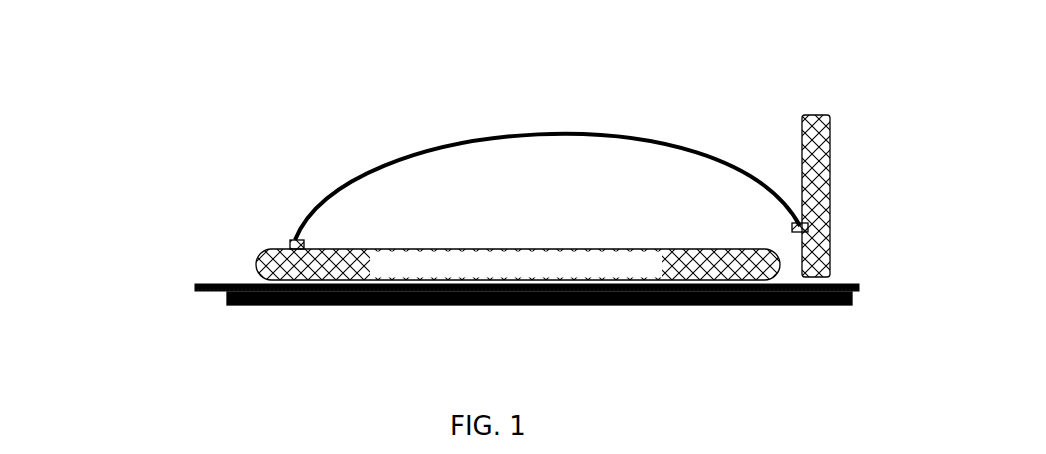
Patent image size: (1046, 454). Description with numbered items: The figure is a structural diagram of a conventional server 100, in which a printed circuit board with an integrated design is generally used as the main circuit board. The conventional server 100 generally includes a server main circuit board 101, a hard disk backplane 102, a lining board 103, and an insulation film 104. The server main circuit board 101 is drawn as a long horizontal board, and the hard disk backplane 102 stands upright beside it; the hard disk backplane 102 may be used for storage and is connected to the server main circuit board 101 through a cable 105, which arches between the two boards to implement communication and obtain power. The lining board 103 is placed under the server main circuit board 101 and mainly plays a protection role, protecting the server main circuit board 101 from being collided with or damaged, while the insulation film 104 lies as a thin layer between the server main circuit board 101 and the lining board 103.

The conventional server 100 is at (111, 56).
The server main circuit board 101 is at (518, 260).
The hard disk backplane 102 is at (806, 170).
The lining board 103 is at (509, 316).
The insulation film 104 is at (465, 290).
The cable 105 is at (547, 168).